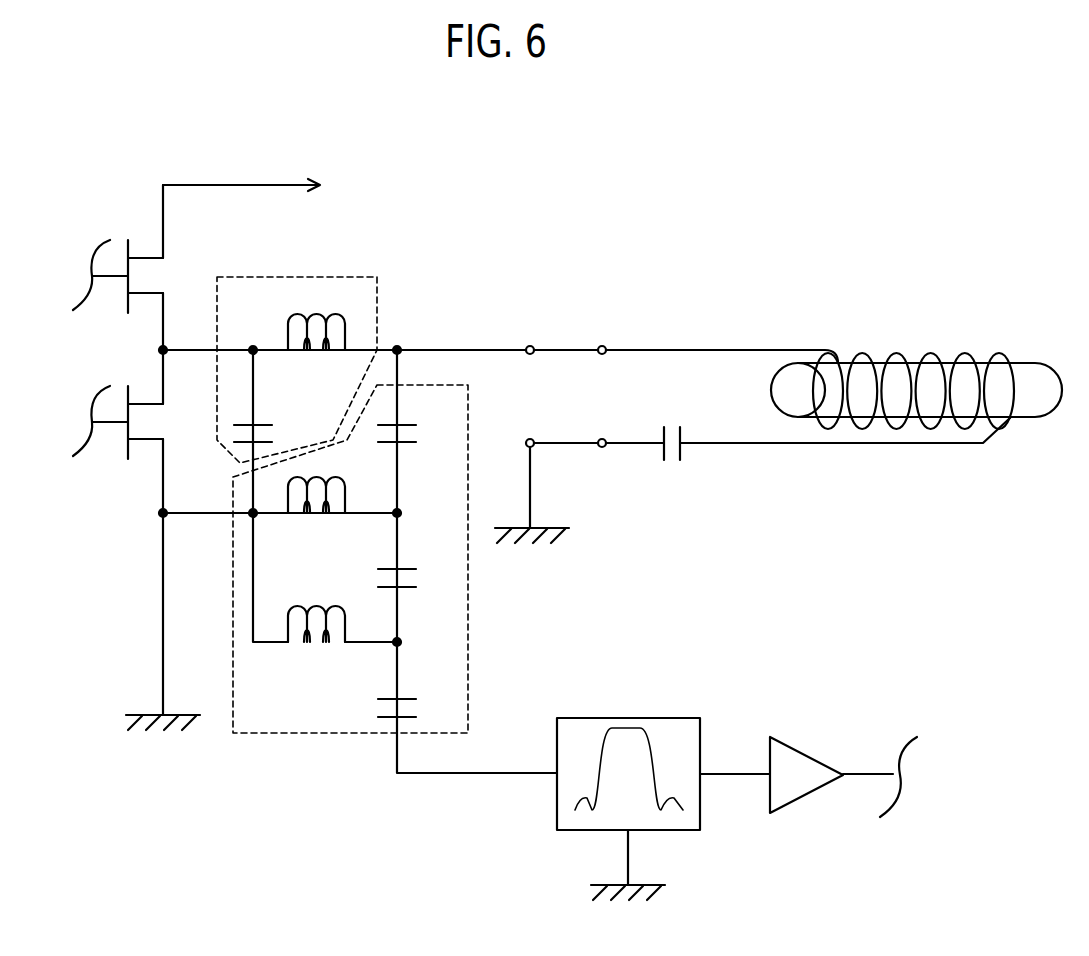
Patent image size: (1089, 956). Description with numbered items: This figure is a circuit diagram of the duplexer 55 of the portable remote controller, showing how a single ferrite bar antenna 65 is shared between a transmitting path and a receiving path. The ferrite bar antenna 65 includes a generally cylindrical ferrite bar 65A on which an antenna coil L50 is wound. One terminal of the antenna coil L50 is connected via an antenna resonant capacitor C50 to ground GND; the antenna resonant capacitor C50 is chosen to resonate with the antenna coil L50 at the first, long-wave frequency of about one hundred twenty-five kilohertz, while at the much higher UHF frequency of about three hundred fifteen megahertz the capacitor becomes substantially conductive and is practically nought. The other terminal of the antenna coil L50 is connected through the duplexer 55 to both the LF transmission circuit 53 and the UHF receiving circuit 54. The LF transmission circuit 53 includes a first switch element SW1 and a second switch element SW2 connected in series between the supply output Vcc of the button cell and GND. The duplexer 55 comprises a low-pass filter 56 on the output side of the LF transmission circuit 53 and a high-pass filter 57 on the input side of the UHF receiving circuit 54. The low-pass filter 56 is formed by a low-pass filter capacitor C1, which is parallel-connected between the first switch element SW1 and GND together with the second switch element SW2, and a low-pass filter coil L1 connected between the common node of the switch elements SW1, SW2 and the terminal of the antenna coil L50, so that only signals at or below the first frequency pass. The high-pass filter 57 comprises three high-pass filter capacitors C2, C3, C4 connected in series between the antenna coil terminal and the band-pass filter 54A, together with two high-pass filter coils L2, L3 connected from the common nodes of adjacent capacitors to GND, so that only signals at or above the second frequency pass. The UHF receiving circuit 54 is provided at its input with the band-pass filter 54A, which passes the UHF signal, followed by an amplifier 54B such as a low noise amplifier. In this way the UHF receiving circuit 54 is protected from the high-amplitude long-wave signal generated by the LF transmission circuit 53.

The LF transmission circuit 53 is at (206, 422).
The first switch element SW1 is at (128, 321).
The second switch element SW2 is at (125, 467).
The duplexer 55 is at (345, 442).
The low-pass filter 56 is at (322, 330).
The high-pass filter 57 is at (353, 465).
The low-pass filter coil L1 is at (316, 317).
The high-pass filter coil L2 is at (316, 514).
The high-pass filter coil L3 is at (342, 611).
The low-pass filter capacitor C1 is at (269, 430).
The high-pass filter capacitor C2 is at (414, 430).
The high-pass filter capacitor C3 is at (414, 580).
The high-pass filter capacitor C4 is at (414, 713).
The ground GND is at (538, 493).
The antenna resonant capacitor C50 is at (688, 450).
The ferrite bar antenna 65 is at (926, 321).
The antenna coil L50 is at (915, 344).
The ferrite bar 65A is at (1043, 373).
The UHF receiving circuit 54 is at (703, 784).
The band-pass filter 54A is at (682, 718).
The amplifier 54B is at (828, 762).